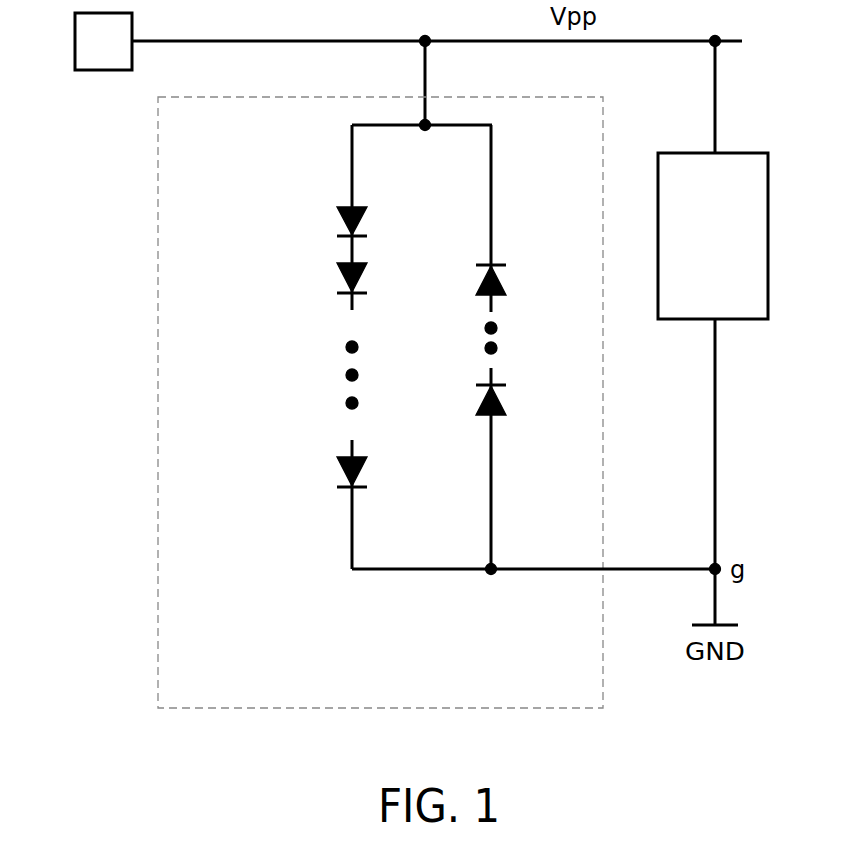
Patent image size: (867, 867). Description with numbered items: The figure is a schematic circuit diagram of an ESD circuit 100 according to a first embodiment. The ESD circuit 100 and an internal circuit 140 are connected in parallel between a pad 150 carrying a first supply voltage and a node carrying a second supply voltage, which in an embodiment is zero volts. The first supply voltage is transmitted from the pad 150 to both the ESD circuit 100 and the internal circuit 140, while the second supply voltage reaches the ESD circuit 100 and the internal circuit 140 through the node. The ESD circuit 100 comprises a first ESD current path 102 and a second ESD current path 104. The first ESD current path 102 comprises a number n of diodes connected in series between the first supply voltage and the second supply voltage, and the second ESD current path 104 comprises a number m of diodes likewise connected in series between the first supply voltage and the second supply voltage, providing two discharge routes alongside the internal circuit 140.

The ESD circuit 100 is at (382, 698).
The first ESD current path 102 is at (350, 548).
The second ESD current path 104 is at (492, 487).
The internal circuit 140 is at (693, 303).
The pad 150 is at (103, 70).